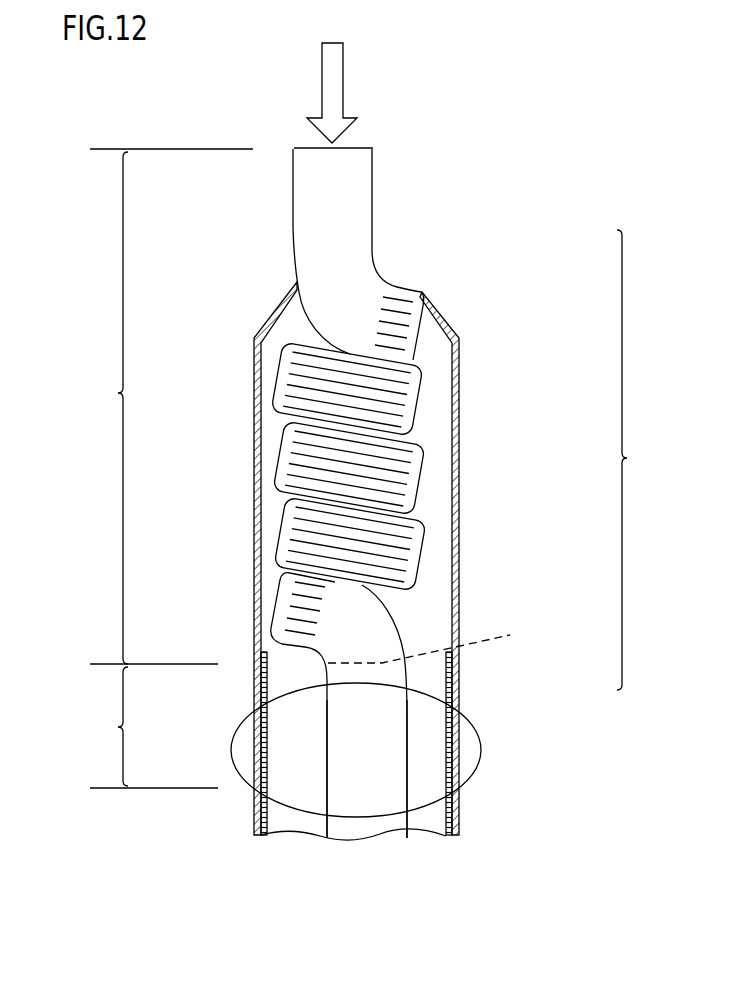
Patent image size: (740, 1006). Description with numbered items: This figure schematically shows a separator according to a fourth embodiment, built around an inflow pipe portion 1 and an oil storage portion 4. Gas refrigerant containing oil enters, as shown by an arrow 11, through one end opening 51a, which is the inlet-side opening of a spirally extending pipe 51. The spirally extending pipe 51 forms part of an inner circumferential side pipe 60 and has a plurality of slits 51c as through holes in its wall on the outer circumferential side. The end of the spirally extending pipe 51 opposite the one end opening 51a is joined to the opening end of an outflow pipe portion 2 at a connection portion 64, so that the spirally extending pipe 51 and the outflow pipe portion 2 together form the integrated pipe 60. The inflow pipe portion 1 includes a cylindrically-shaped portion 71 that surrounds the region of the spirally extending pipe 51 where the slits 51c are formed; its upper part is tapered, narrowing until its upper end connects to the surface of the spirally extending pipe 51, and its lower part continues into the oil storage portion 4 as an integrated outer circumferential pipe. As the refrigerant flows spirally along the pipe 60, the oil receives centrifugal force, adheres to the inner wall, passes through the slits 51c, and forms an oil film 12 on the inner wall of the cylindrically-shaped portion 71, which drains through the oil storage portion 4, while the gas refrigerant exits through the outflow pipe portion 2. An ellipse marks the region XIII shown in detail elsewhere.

The arrow 11 is at (345, 65).
The one end opening 51a is at (356, 148).
The spirally extending pipe 51 is at (358, 270).
The slits 51c is at (410, 450).
The cylindrically-shaped portion 71 is at (254, 379).
The oil film 12 is at (443, 812).
The connection portion 64 is at (432, 643).
The region XIII is at (482, 750).
The outflow pipe portion 2 is at (372, 745).
The integrated pipe 60 is at (639, 460).
The inflow pipe portion 1 is at (171, 406).
The oil storage portion 4 is at (154, 727).